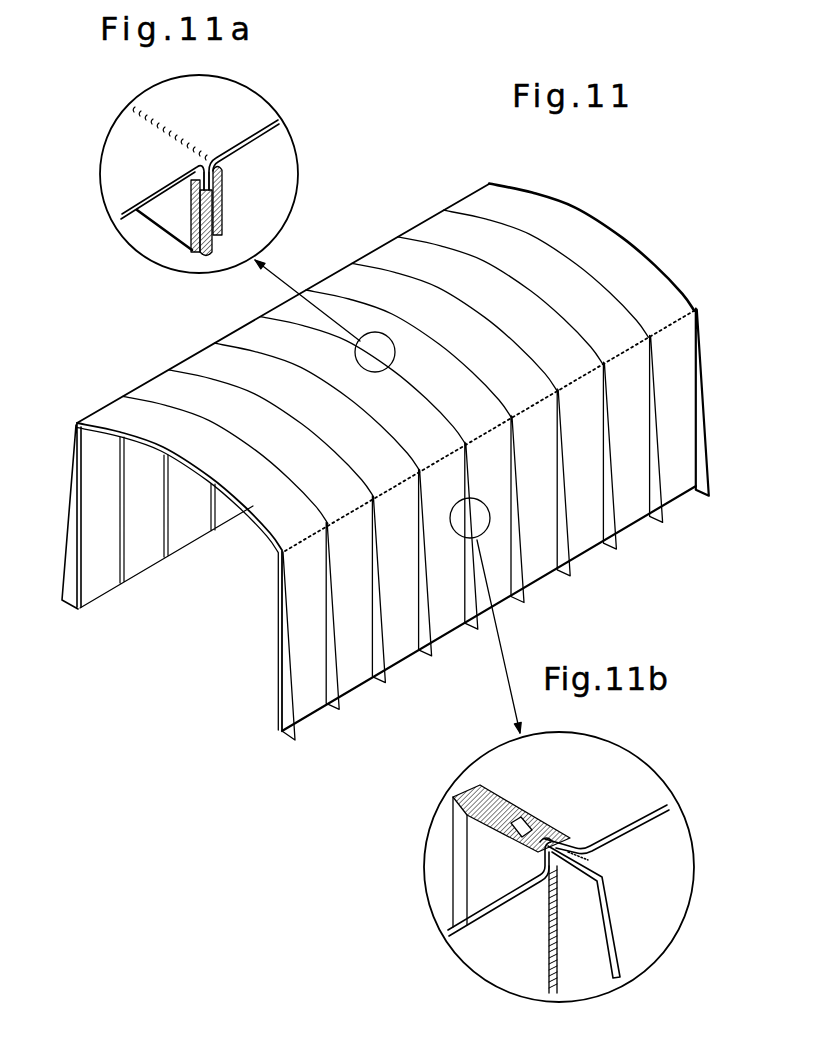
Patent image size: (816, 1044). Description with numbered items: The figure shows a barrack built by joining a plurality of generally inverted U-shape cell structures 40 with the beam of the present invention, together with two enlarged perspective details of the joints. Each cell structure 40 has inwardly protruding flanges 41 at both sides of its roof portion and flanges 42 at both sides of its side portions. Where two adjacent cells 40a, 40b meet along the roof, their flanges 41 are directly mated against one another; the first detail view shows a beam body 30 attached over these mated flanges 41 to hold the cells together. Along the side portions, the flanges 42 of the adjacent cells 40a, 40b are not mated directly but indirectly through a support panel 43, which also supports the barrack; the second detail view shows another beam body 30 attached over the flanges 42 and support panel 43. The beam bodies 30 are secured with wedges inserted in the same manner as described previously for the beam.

In FIG. 11A, the beam body 30 is at (200, 200).
In FIG. 11B, the beam body 30 is at (503, 835).
In FIG. 11, the cell structure 40 is at (468, 278).
In FIG. 11, the adjacent cell 40a is at (378, 322).
In FIG. 11A, the adjacent cell 40a is at (242, 100).
In FIG. 11B, the adjacent cell 40a is at (640, 850).
In FIG. 11, the adjacent cell 40b is at (333, 353).
In FIG. 11A, the adjacent cell 40b is at (125, 167).
In FIG. 11B, the adjacent cell 40b is at (497, 942).
In FIG. 11A, the flange 41 is at (220, 182).
In FIG. 11B, the flange 42 is at (552, 835).
In FIG. 11B, the support panel 43 is at (578, 925).